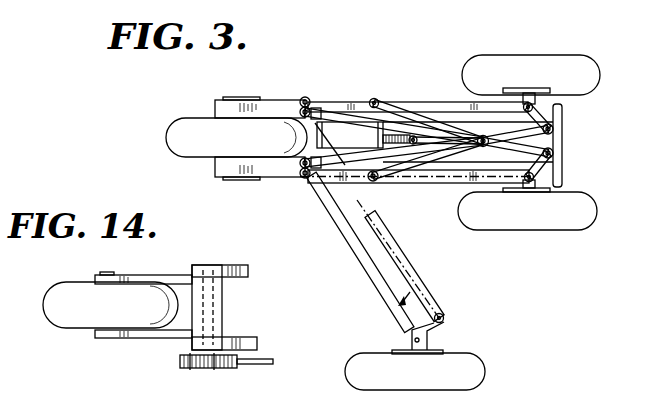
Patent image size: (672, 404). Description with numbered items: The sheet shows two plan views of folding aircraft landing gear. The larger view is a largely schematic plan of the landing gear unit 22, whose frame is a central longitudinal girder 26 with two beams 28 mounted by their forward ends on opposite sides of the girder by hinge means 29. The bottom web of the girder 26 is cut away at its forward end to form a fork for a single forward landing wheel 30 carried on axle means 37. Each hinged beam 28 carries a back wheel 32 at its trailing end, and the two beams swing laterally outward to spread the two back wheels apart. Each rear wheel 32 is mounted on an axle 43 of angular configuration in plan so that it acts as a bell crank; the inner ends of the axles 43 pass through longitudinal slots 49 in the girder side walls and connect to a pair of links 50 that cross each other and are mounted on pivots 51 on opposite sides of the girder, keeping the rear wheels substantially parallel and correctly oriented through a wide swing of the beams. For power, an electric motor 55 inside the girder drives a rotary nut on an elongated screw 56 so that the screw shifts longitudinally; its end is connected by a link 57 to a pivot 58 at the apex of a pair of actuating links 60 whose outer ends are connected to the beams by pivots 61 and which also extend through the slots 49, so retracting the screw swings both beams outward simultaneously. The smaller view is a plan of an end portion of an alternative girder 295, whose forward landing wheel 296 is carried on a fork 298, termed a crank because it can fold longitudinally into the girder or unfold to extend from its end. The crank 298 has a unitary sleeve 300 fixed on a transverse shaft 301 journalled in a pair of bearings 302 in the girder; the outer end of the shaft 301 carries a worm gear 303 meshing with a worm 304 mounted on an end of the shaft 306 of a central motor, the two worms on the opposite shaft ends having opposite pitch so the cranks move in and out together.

In FIG. 3, the landing gear unit 22 is at (452, 34).
In FIG. 3, the central longitudinal girder 26 is at (562, 133).
In FIG. 3, the beam 28 is at (457, 99).
In FIG. 3, the hinge means 29 is at (306, 97).
In FIG. 3, the forward landing wheel 30 is at (187, 120).
In FIG. 3, the back wheel 32 is at (598, 75).
In FIG. 3, the axle means 37 is at (238, 178).
In FIG. 3, the axle 43 is at (551, 110).
In FIG. 3, the longitudinal slot 49 is at (422, 112).
In FIG. 3, the link 50 is at (333, 117).
In FIG. 3, the pivot 51 is at (299, 101).
In FIG. 3, the electric motor 55 is at (347, 133).
In FIG. 3, the elongated screw 56 is at (430, 137).
In FIG. 3, the link 57 is at (452, 98).
In FIG. 3, the pivot 58 is at (483, 136).
In FIG. 3, the actuating link 60 is at (396, 126).
In FIG. 3, the pivot 61 is at (376, 99).
In FIG. 14, the girder 295 is at (255, 250).
In FIG. 14, the forward landing wheel 296 is at (63, 320).
In FIG. 14, the fork 298 is at (138, 280).
In FIG. 14, the sleeve 300 is at (223, 318).
In FIG. 14, the transverse shaft 301 is at (233, 303).
In FIG. 14, the bearing 302 is at (223, 282).
In FIG. 14, the worm gear 303 is at (183, 368).
In FIG. 14, the worm 304 is at (212, 370).
In FIG. 14, the shaft 306 is at (273, 362).